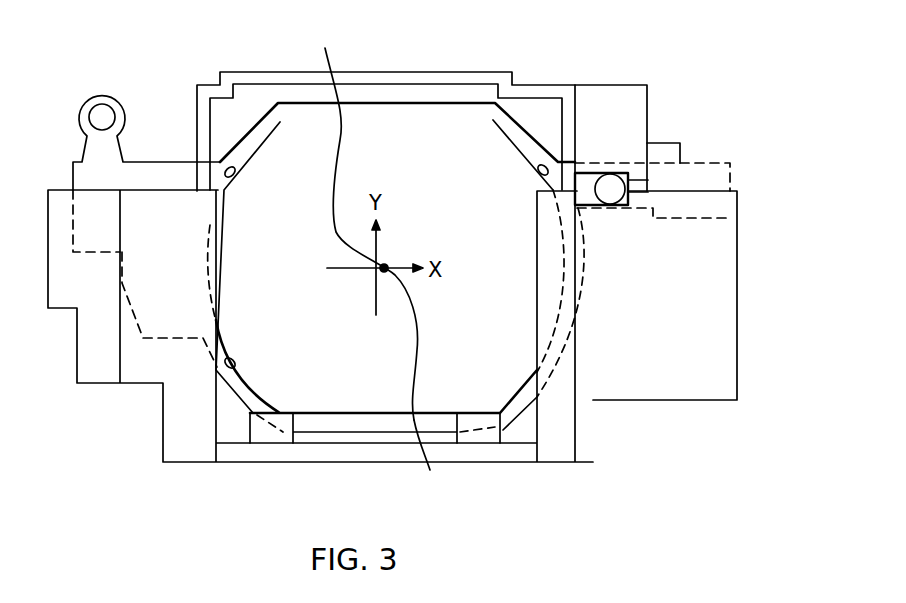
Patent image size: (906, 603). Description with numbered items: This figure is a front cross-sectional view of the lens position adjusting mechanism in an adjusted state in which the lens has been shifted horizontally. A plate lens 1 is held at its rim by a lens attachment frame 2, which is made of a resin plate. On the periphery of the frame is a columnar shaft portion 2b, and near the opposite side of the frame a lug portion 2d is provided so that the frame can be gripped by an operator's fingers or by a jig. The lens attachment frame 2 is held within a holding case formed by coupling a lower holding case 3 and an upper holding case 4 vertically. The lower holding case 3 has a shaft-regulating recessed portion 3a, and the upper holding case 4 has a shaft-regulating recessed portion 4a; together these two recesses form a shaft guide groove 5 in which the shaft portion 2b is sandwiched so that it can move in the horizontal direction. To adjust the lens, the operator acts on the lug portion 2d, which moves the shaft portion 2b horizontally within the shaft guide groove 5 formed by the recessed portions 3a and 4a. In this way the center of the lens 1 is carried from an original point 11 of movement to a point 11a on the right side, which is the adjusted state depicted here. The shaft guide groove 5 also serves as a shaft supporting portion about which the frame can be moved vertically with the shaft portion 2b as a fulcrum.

The plate lens 1 is at (377, 378).
The lens attachment frame 2 is at (437, 102).
The shaft portion 2b is at (611, 190).
The lug portion 2d is at (100, 94).
The lower holding case 3 is at (737, 300).
The shaft-regulating recessed portion 3a is at (592, 207).
The upper holding case 4 is at (268, 28).
The shaft-regulating recessed portion 4a is at (628, 180).
The shaft guide groove 5 is at (638, 180).
The original point 11 is at (366, 220).
The point on the right side 11a is at (441, 465).